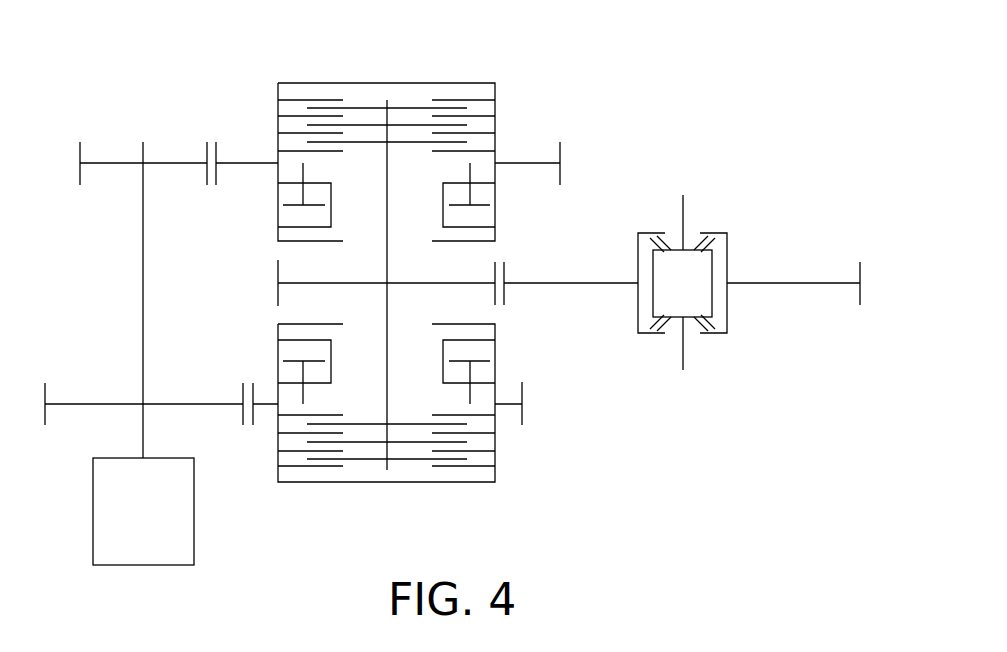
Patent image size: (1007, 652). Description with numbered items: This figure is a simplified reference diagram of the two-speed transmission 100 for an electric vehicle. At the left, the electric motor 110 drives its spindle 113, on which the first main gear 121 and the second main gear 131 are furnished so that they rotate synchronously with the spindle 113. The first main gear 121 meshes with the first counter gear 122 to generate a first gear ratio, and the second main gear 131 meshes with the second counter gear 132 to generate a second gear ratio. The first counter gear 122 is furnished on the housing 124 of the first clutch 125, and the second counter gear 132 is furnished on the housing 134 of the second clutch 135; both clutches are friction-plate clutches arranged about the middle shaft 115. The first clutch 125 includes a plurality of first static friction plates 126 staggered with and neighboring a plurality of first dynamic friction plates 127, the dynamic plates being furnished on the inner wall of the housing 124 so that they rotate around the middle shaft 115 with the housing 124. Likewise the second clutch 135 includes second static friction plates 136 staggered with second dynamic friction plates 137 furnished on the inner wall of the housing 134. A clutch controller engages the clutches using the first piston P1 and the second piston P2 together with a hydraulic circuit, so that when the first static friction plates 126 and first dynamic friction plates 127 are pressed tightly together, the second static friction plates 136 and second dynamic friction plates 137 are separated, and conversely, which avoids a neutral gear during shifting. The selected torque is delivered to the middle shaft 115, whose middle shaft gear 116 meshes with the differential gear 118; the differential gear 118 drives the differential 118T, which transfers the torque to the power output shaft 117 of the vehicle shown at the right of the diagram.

The two-speed transmission 100 is at (78, 31).
The electric motor 110 is at (195, 538).
The spindle 113 is at (143, 305).
The middle shaft 115 is at (387, 305).
The middle shaft gear 116 is at (296, 283).
The power output shaft 117 is at (683, 218).
The differential gear 118 is at (810, 282).
The differential 118T is at (727, 265).
The first main gear 121 is at (105, 401).
The first counter gear 122 is at (266, 408).
The housing of the first clutch 124 is at (407, 483).
The first clutch 125 is at (378, 521).
The first static friction plates 126 is at (365, 459).
The first dynamic friction plates 127 is at (308, 466).
The second main gear 131 is at (105, 161).
The second counter gear 132 is at (252, 161).
The housing of the second clutch 134 is at (410, 83).
The second clutch 135 is at (379, 46).
The second static friction plates 136 is at (365, 106).
The second dynamic friction plates 137 is at (308, 98).
The first piston P1 is at (470, 396).
The second piston P2 is at (470, 172).